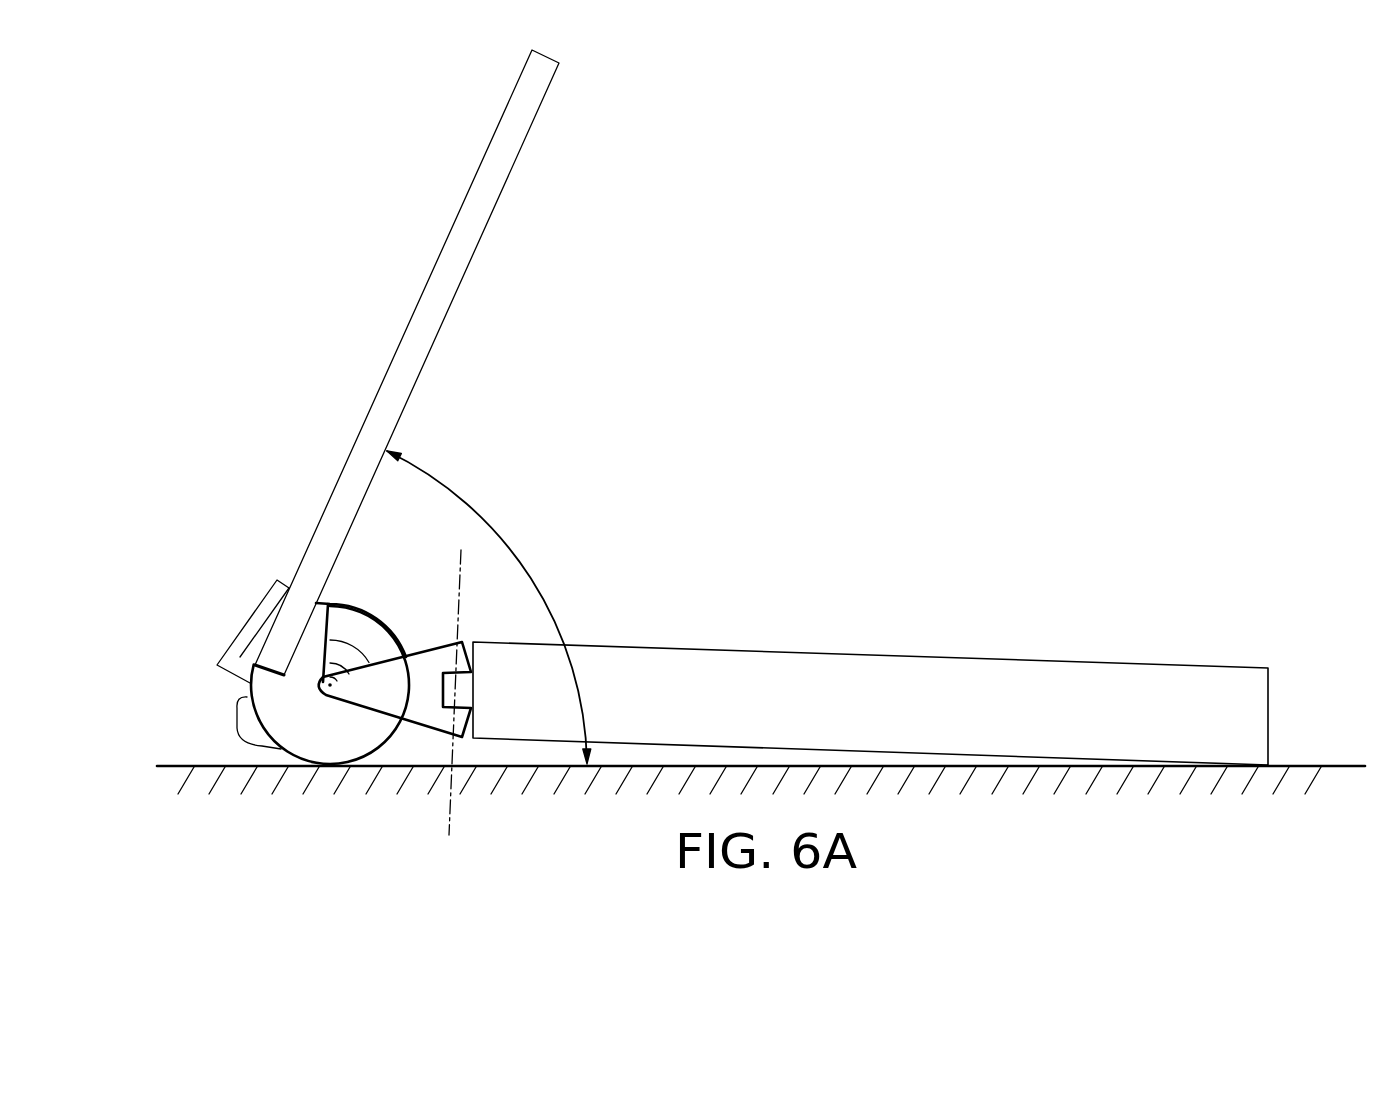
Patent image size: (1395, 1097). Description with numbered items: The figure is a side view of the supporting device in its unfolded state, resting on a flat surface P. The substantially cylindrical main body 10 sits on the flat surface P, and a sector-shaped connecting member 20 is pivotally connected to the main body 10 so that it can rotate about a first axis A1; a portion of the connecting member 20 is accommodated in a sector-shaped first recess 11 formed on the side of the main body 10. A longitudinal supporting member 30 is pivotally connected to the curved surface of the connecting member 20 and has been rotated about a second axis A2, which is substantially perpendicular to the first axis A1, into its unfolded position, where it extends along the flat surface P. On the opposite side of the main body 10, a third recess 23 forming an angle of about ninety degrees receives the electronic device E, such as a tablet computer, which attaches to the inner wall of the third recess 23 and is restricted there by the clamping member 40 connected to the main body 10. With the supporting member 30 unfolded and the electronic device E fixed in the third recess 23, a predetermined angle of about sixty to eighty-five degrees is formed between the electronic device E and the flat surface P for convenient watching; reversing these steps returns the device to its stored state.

The electronic device E is at (425, 318).
The first recess 11 is at (363, 627).
The connecting member 20 is at (418, 668).
The third recess 23 is at (294, 647).
The clamping member 40 is at (237, 657).
The first axis A1 is at (328, 685).
The main body 10 is at (307, 722).
The supporting member 30 is at (918, 690).
The flat surface P is at (1347, 765).
The second axis A2 is at (447, 818).